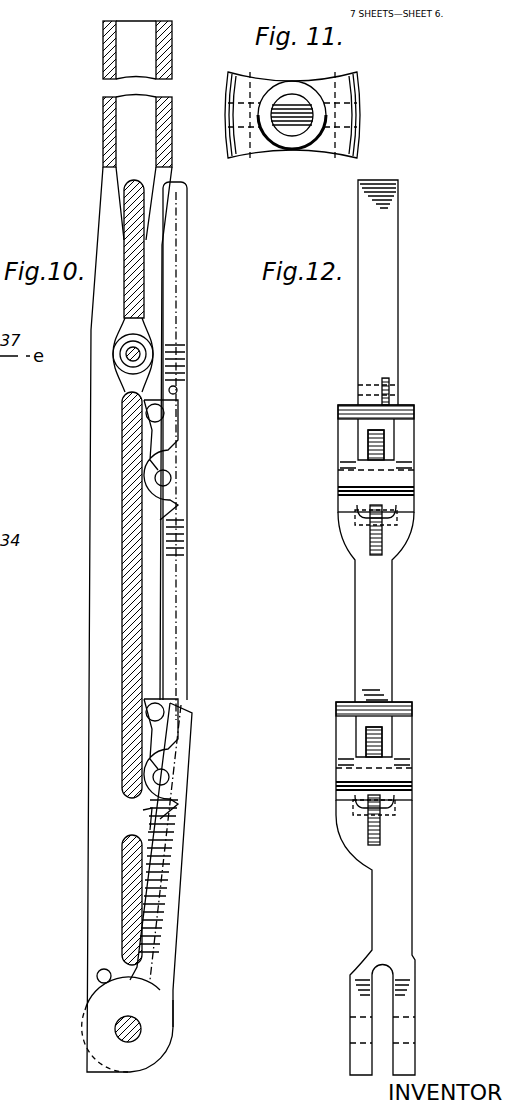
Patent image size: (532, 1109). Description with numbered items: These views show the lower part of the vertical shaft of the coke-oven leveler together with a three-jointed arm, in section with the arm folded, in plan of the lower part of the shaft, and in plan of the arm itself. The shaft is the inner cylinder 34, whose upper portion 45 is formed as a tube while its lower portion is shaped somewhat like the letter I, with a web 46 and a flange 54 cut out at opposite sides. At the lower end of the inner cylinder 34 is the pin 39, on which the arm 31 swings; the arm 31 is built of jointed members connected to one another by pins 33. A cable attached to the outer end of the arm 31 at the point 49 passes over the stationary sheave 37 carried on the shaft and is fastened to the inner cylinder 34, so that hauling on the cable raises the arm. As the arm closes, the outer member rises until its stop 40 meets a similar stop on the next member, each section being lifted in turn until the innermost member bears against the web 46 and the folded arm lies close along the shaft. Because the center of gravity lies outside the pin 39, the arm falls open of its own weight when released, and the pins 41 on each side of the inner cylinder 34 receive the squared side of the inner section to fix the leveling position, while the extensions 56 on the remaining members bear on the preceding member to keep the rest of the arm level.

In FIG. 10, the arm 31 is at (182, 900).
In FIG. 12, the arm 31 is at (428, 882).
In FIG. 10, the pin 33 is at (200, 777).
In FIG. 12, the pin 33 is at (430, 776).
In FIG. 10, the inner cylinder 34 is at (180, 955).
In FIG. 11, the inner cylinder 34 is at (375, 115).
In FIG. 10, the sheave 37 is at (118, 352).
In FIG. 10, the pin 39 is at (141, 1030).
In FIG. 10, the stop 40 is at (143, 818).
In FIG. 12, the stop 40 is at (430, 810).
In FIG. 10, the pin 41 is at (97, 976).
In FIG. 10, the upper portion 45 is at (103, 44).
In FIG. 11, the upper portion 45 is at (290, 145).
In FIG. 10, the web 46 is at (130, 888).
In FIG. 11, the web 46 is at (300, 120).
In FIG. 12, the point 49 is at (390, 383).
In FIG. 10, the flange 54 is at (97, 485).
In FIG. 10, the extension 56 is at (198, 673).
In FIG. 12, the extension 56 is at (430, 710).